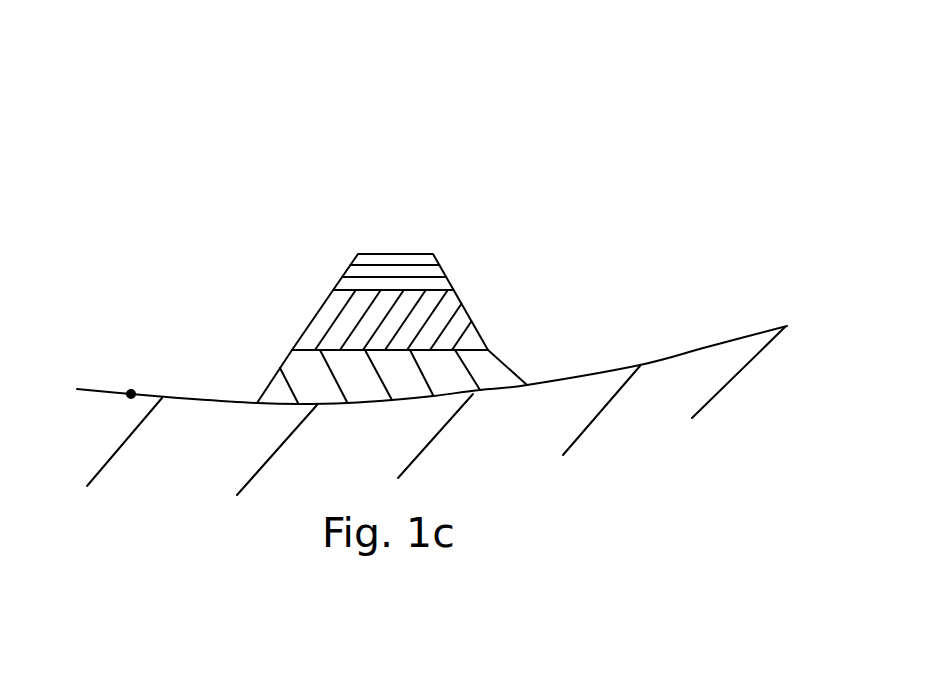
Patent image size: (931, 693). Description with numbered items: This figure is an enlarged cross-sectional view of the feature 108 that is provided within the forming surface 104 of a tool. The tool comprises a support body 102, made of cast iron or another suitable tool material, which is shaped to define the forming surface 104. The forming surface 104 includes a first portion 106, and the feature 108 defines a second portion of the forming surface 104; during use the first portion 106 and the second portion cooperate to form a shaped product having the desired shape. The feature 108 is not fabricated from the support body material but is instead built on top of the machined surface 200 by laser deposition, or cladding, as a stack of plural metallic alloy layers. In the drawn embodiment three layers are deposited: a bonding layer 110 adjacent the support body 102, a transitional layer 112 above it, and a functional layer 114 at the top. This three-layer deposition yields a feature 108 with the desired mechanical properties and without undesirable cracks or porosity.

The support body 102 is at (655, 425).
The forming surface 104 is at (427, 227).
The first portion 106 is at (193, 399).
The feature 108 is at (452, 242).
The bonding layer 110 is at (510, 363).
The transitional layer 112 is at (467, 308).
The functional layer 114 is at (439, 260).
The machined surface 200 is at (131, 393).